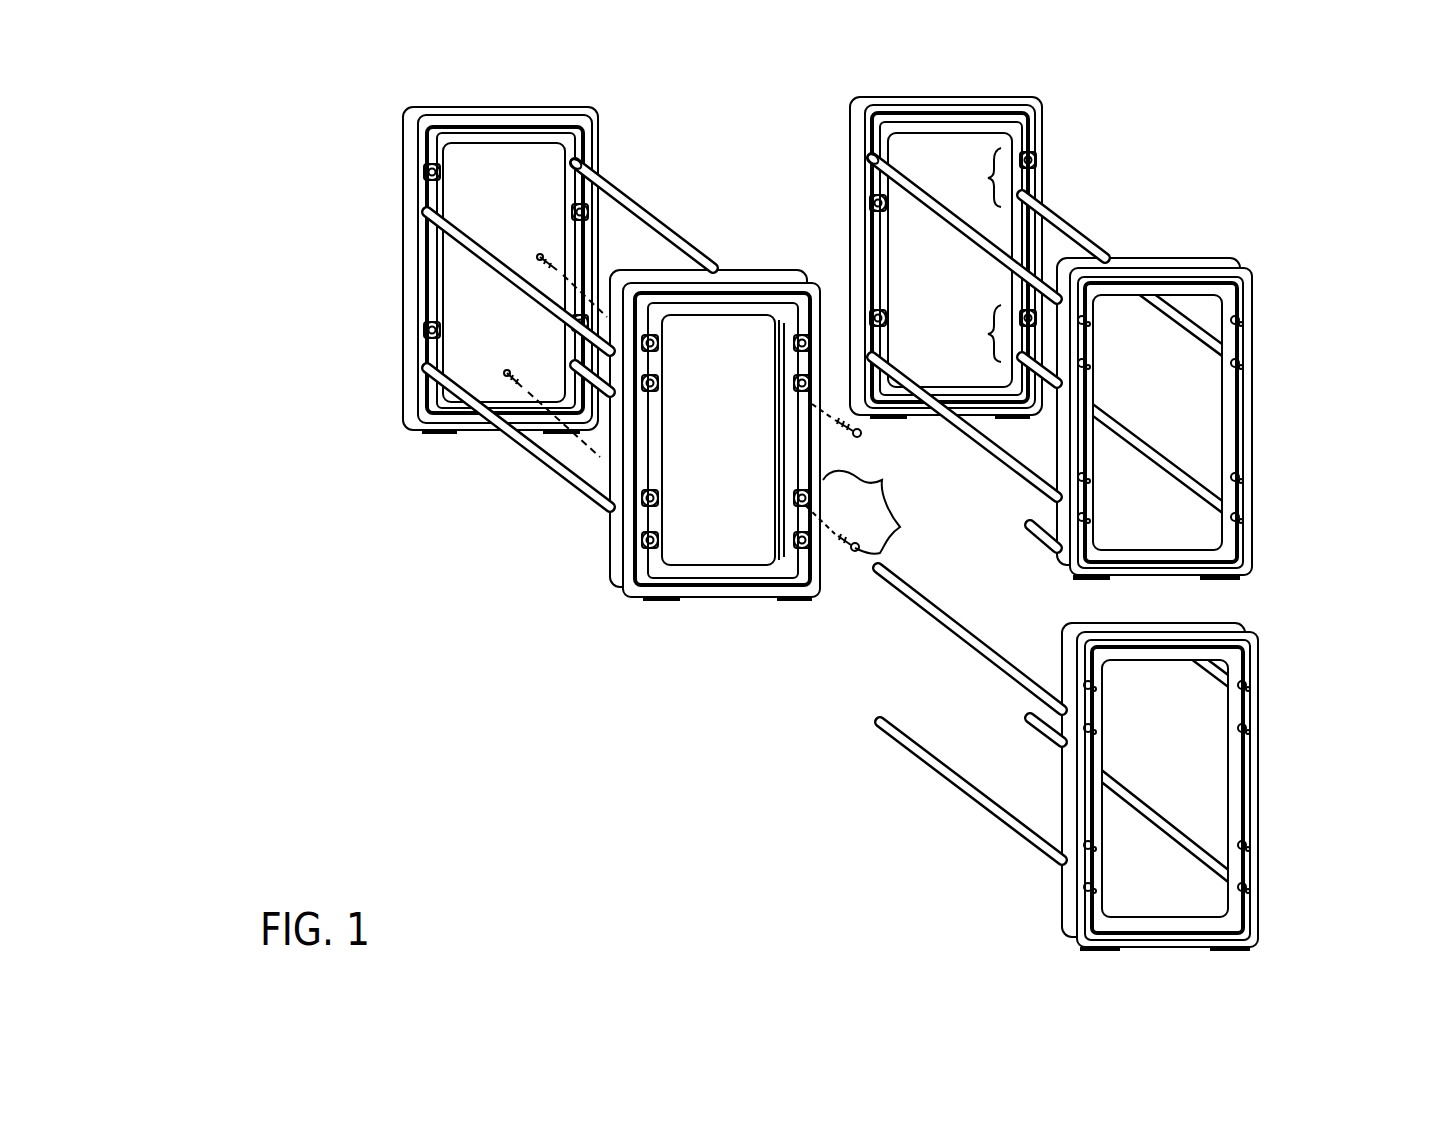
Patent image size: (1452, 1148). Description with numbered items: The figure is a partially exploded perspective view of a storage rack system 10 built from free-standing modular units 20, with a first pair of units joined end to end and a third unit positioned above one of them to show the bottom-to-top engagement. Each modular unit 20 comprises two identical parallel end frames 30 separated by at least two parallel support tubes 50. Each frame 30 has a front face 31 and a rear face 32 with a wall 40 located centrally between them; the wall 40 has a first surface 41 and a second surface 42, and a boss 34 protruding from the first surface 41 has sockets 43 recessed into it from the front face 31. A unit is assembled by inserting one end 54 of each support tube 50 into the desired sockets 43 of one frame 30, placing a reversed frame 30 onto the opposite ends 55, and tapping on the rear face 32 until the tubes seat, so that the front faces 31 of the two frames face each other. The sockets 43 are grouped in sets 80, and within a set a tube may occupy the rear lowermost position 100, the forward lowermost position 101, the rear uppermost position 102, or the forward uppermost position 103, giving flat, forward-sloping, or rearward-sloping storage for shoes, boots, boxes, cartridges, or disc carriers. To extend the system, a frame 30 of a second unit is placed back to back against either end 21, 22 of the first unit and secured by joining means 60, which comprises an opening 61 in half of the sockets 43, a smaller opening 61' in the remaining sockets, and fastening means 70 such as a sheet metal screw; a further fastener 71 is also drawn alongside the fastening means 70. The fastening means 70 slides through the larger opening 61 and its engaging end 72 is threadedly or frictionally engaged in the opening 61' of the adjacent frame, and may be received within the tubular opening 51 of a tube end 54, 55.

The storage rack system 10 is at (819, 521).
The modular unit 20 is at (339, 330).
The end 21 is at (410, 410).
The end 22 is at (617, 568).
The end frame 30 is at (405, 130).
The front face 31 is at (1042, 133).
The rear face 32 is at (1253, 295).
The boss 34 is at (440, 324).
The wall 40 is at (890, 253).
The first surface 41 is at (477, 140).
The second surface 42 is at (720, 310).
The socket 43 is at (418, 177).
The support tube 50 is at (540, 456).
The tubular opening 51 is at (878, 719).
The end 54 is at (880, 578).
The end 55 is at (1060, 877).
The joining means 60 is at (900, 527).
The opening 61 is at (767, 492).
The opening 61' is at (762, 441).
The fastening means 70 is at (853, 552).
The screw 71 is at (865, 441).
The engaging end 72 is at (843, 540).
The set of sockets 80 is at (994, 255).
The rear lowermost position 100 is at (571, 363).
The forward lowermost position 101 is at (437, 212).
The rear uppermost position 102 is at (567, 168).
The forward uppermost position 103 is at (867, 162).